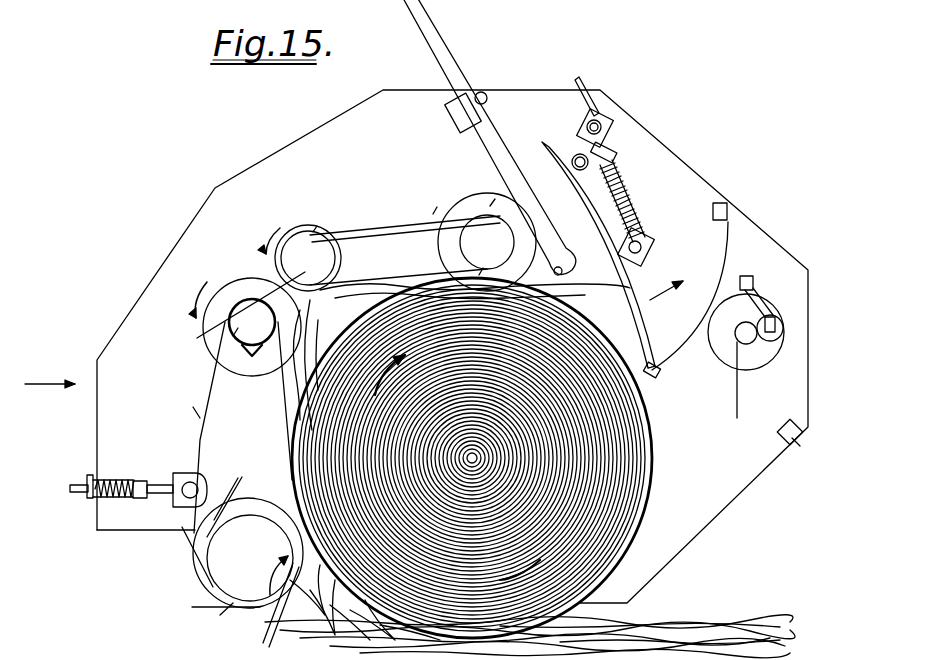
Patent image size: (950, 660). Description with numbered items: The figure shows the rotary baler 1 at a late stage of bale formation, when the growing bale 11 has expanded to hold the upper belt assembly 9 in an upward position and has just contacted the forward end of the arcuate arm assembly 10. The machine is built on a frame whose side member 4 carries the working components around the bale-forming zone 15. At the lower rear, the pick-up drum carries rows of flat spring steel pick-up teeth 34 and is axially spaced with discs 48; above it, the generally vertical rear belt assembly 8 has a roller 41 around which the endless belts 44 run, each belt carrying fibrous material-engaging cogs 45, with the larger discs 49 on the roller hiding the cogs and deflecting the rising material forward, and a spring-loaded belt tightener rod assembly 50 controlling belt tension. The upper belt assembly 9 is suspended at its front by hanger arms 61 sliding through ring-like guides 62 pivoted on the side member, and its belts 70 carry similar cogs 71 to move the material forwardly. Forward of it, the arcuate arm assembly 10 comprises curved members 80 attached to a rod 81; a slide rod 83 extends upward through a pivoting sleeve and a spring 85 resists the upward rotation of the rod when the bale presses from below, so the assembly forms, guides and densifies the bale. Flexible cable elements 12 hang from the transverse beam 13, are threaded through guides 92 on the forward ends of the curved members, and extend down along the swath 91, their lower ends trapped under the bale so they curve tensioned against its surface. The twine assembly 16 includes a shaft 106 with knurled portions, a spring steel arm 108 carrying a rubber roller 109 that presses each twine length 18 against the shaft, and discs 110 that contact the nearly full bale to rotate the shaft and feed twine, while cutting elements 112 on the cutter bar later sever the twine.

The rotary baler 1 is at (705, 124).
The side member 4 is at (321, 127).
The rear belt assembly 8 is at (180, 418).
The upper belt assembly 9 is at (482, 181).
The arcuate arm assembly 10 is at (588, 210).
The bale 11 is at (632, 533).
The flexible elements 12 is at (660, 380).
The transverse beam 13 is at (722, 212).
The bale-forming zone 15 is at (325, 418).
The twine assembly 16 is at (772, 282).
The twine lengths 18 is at (737, 416).
The pick-up teeth 34 is at (268, 632).
The roller 41 is at (206, 333).
The endless belts 44 is at (208, 394).
The cogs 45 is at (216, 350).
The discs 48 is at (203, 578).
The discs 49 is at (240, 284).
The belt tightener rod assembly 50 is at (130, 478).
The hanger arms 61 is at (432, 38).
The guides 62 is at (490, 92).
The endless belts 70 is at (402, 220).
The cogs 71 is at (368, 223).
The curved members 80 is at (571, 188).
The rod 81 is at (648, 244).
The slide rod 83 is at (598, 82).
The spring 85 is at (638, 185).
The swath 91 is at (748, 624).
The guides 92 is at (664, 374).
The shaft 106 is at (783, 354).
The spring steel arm 108 is at (760, 299).
The rubber roller 109 is at (783, 329).
The discs 110 is at (752, 366).
The cutting elements 112 is at (796, 454).